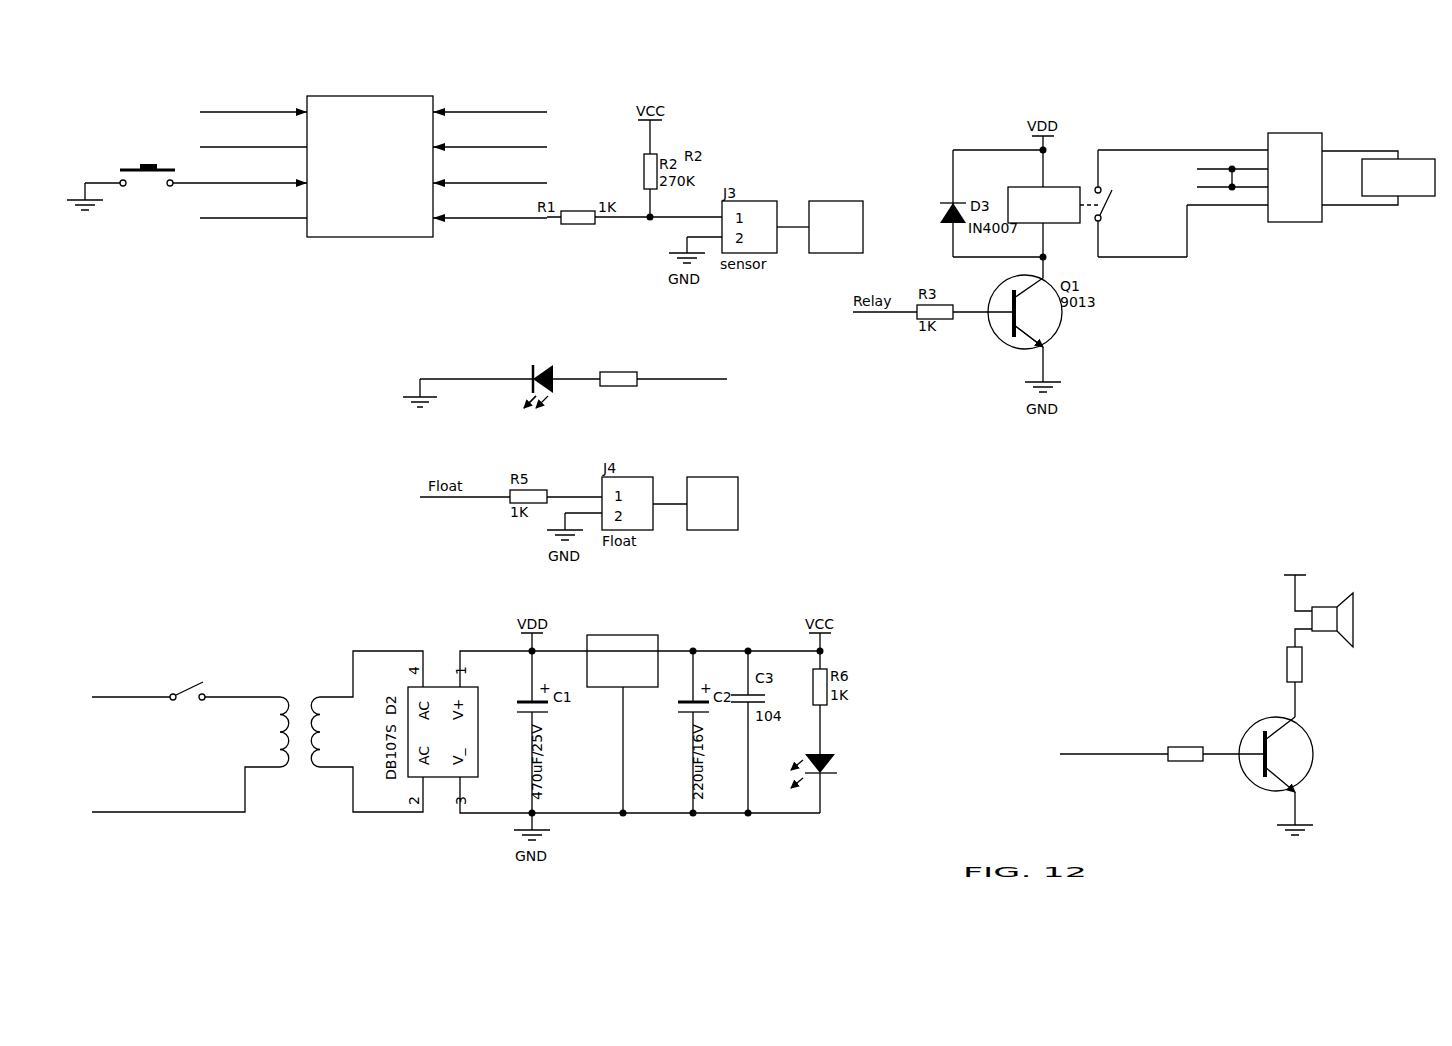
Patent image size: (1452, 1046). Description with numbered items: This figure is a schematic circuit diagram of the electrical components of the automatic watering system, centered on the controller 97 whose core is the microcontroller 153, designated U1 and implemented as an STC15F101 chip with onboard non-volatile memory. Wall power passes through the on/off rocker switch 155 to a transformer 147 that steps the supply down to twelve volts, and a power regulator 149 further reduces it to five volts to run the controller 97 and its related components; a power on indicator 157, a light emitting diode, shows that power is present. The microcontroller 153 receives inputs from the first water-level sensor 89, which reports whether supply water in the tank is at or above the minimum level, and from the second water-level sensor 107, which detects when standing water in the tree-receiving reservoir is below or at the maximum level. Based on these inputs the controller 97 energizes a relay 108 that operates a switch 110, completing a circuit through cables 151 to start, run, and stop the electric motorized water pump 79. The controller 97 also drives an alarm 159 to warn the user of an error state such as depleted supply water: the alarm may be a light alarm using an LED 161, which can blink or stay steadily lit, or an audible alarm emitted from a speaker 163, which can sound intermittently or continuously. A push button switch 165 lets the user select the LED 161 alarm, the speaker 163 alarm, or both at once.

The controller 97 is at (322, 76).
The microcontroller 153 is at (372, 96).
The push button switch 165 is at (148, 160).
The second water-level sensor 107 is at (836, 201).
The relay 108 is at (1078, 170).
The switch 110 is at (1102, 222).
The cables 151 is at (1357, 205).
The electric motorized water pump 79 is at (1410, 196).
The alarm 159 is at (476, 362).
The LED 161 is at (554, 369).
The first water-level sensor 89 is at (716, 477).
The on/off rocker switch 155 is at (190, 687).
The transformer 147 is at (304, 676).
The power regulator 149 is at (659, 640).
The power on indicator 157 is at (837, 770).
The speaker 163 is at (1355, 601).